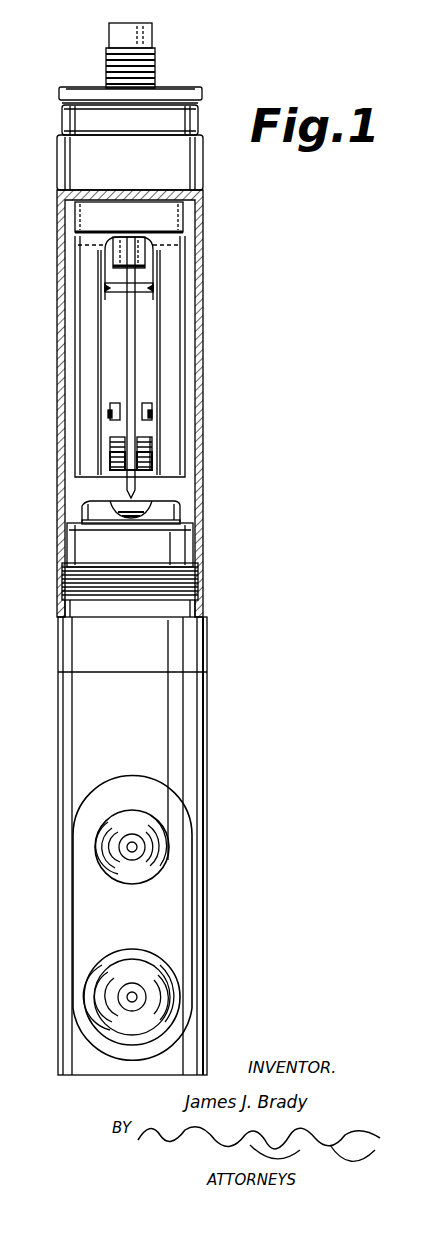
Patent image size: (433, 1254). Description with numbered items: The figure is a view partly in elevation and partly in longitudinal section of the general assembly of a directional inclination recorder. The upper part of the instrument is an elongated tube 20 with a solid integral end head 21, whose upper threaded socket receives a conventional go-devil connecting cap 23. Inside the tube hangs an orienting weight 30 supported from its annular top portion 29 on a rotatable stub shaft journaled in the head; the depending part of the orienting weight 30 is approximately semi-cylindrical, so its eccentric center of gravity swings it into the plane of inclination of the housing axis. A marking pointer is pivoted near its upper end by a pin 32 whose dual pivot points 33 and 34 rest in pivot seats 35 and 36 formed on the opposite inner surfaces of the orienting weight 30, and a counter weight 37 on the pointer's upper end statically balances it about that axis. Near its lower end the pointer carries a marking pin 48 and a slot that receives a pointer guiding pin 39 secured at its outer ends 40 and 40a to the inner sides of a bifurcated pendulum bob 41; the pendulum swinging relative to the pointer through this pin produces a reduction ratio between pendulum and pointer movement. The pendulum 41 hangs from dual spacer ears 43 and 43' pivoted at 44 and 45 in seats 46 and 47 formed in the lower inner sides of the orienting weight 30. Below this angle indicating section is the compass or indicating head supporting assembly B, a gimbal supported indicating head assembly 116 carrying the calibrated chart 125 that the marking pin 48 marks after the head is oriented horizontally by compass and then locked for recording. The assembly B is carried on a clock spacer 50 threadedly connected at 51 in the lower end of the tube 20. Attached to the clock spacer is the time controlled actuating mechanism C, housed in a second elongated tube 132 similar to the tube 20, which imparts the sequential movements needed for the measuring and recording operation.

The elongated tube 20 is at (58, 367).
The end head 21 is at (203, 183).
The connecting cap 23 is at (203, 93).
The annular top portion 29 is at (183, 218).
The orienting weight 30 is at (180, 357).
The pin 32 is at (142, 292).
The pivot point 33 is at (105, 297).
The pivot point 34 is at (153, 305).
The pivot seat 35 is at (105, 287).
The pivot seat 36 is at (153, 290).
The counter weight 37 is at (145, 258).
The pointer guiding pin 39 is at (150, 440).
The outer end of guiding pin 40 is at (110, 458).
The outer end of guiding pin 40a is at (148, 452).
The pendulum bob 41 is at (150, 465).
The spacer ear 43 is at (75, 451).
The spacer ear 43' is at (196, 442).
The pivot 44 is at (108, 408).
The pivot 45 is at (150, 400).
The seat 46 is at (108, 415).
The seat 47 is at (150, 412).
The marking pin 48 is at (136, 505).
The clock spacer 50 is at (205, 648).
The threaded connection 51 is at (205, 583).
The indicating head assembly 116 is at (180, 505).
The calibrated chart 125 is at (85, 500).
The elongated tube 132 is at (207, 927).
The indicating head supporting assembly B is at (212, 545).
The time controlled actuating mechanism C is at (207, 780).